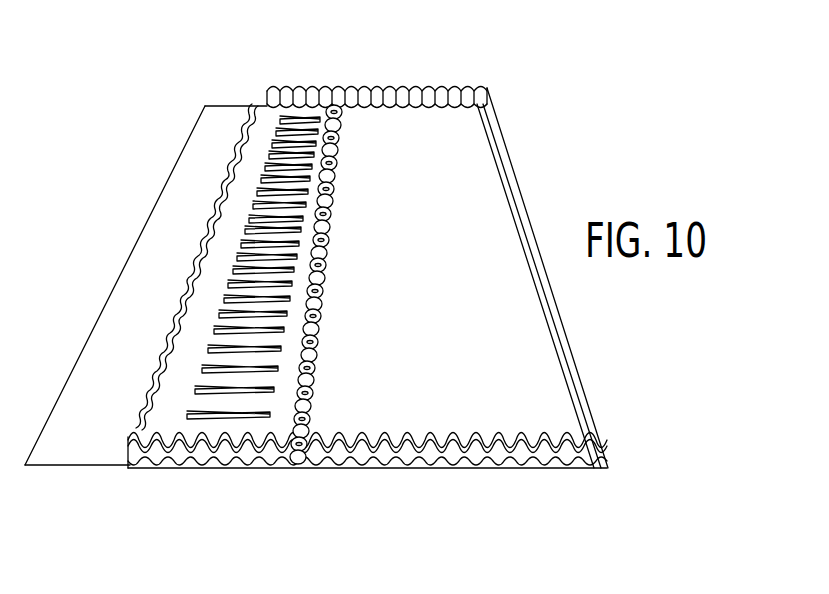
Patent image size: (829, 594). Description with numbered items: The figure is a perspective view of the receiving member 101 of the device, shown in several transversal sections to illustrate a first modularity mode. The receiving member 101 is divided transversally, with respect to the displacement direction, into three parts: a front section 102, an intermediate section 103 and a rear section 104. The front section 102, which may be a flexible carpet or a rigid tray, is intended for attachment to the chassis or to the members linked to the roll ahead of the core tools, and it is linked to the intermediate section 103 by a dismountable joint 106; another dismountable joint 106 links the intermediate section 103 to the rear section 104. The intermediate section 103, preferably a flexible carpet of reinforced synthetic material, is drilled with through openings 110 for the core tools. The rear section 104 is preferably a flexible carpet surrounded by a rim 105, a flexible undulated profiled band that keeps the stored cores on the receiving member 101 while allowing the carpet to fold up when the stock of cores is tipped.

The receiving member 101 is at (178, 90).
The front section 102 is at (124, 305).
The intermediate section 103 is at (289, 82).
The rear section 104 is at (502, 476).
The rim 105 is at (453, 83).
The dismountable joint 106 is at (342, 100).
The through openings 110 is at (224, 420).